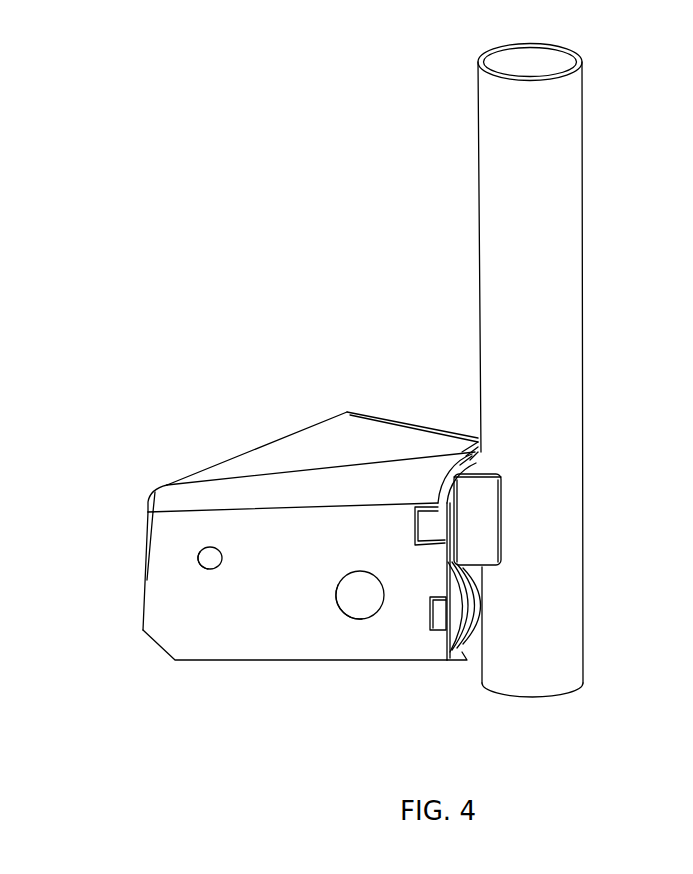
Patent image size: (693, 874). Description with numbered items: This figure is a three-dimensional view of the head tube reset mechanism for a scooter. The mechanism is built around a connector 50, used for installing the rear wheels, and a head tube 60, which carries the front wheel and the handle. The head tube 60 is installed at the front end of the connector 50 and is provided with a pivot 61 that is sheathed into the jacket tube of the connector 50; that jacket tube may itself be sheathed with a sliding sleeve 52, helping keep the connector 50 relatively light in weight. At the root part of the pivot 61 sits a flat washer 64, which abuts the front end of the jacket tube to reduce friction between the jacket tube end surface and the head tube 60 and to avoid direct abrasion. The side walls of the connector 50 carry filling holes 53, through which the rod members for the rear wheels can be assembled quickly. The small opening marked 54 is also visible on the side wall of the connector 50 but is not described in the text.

The connector 50 is at (283, 346).
The sliding sleeve 52 is at (450, 658).
The filling holes 53 is at (362, 597).
The hole 54 is at (210, 560).
The head tube 60 is at (547, 353).
The pivot 61 is at (478, 605).
The flat washer 64 is at (472, 640).